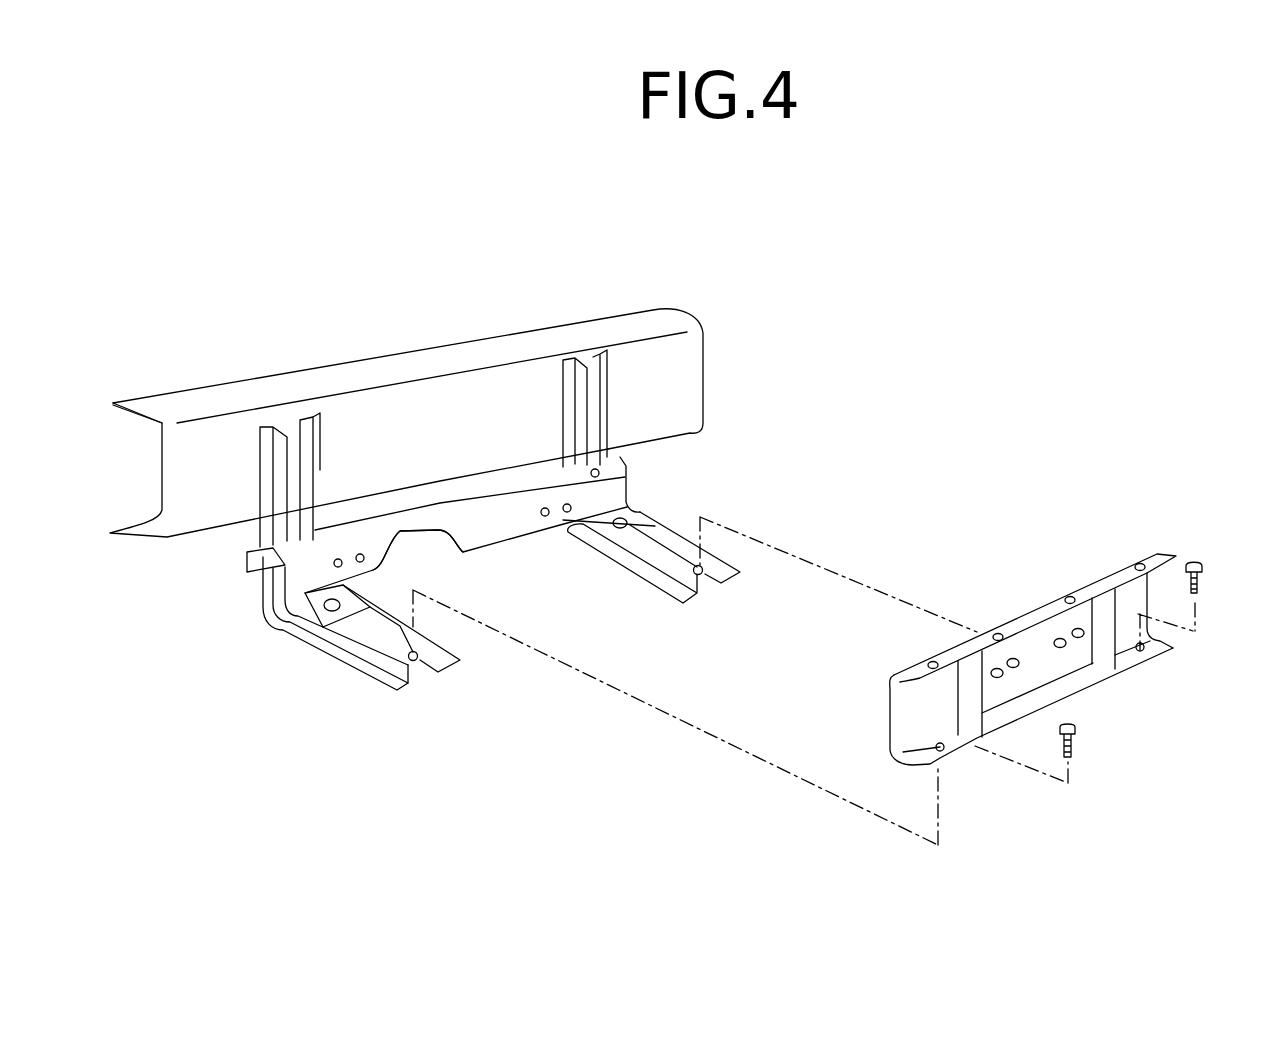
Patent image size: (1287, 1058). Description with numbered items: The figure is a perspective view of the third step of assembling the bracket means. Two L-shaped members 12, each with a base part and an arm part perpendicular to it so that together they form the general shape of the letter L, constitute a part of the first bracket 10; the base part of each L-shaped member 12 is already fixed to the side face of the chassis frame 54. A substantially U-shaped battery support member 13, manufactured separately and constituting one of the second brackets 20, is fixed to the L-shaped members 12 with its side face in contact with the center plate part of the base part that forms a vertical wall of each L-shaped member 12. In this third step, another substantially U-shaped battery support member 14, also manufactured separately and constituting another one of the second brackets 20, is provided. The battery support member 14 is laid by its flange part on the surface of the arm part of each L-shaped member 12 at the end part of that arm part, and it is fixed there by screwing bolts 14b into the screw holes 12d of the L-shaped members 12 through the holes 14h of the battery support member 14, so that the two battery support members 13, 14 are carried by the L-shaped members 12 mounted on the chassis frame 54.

The chassis frame 54 is at (325, 377).
The second brackets 20 is at (627, 465).
The battery support member 13 is at (487, 530).
The L-shaped members 12 is at (260, 593).
The screw holes 12d is at (418, 661).
The first bracket 10 is at (315, 687).
The battery support member 14 is at (1018, 612).
The bolt 14b is at (1200, 556).
The holes 14h is at (917, 752).